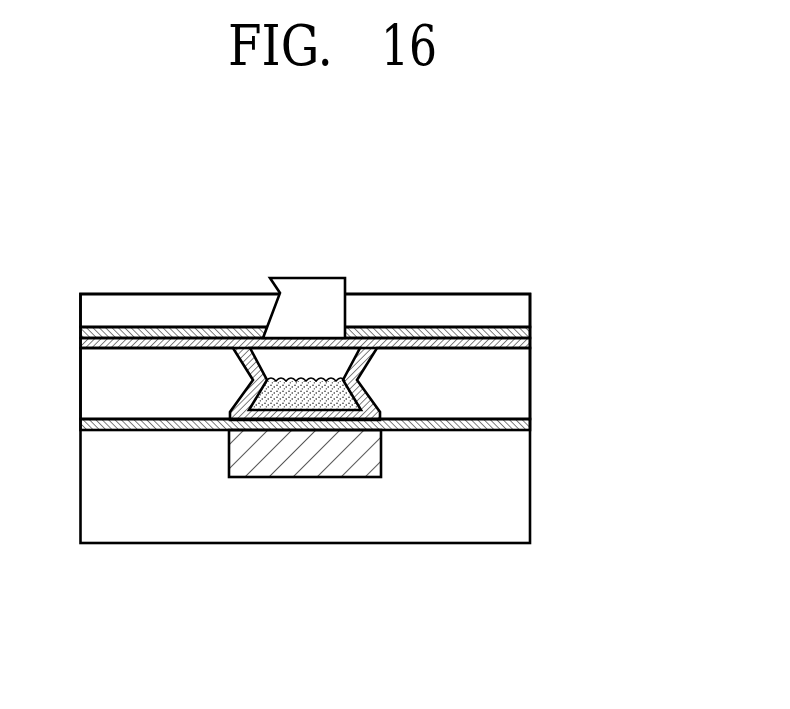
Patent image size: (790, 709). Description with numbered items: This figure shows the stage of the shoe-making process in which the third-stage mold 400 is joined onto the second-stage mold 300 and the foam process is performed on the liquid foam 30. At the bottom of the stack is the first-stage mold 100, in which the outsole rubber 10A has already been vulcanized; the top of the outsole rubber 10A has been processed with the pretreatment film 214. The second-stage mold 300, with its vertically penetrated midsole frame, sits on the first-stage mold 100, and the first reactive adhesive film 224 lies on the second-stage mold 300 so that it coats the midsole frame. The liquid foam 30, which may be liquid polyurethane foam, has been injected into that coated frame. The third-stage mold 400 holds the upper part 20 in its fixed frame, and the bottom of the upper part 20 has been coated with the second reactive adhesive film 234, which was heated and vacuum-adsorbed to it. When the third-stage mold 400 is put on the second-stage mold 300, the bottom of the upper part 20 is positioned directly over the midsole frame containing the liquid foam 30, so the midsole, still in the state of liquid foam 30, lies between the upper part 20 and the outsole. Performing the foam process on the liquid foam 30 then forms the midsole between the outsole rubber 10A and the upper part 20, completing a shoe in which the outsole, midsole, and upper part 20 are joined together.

The first-stage mold 100 is at (546, 503).
The third-stage mold 400 is at (546, 298).
The second-stage mold 300 is at (546, 398).
The second reactive adhesive film 234 is at (532, 334).
The first reactive adhesive film 224 is at (532, 345).
The pretreatment film 214 is at (532, 424).
The liquid foam 30 is at (282, 397).
The outsole rubber 10A is at (338, 462).
The upper part 20 is at (320, 292).